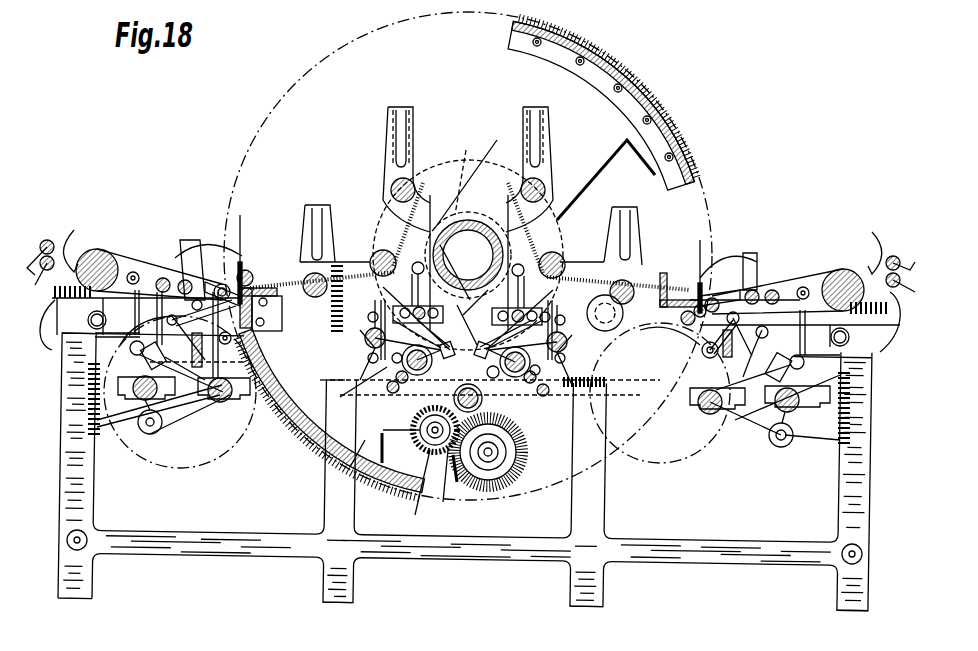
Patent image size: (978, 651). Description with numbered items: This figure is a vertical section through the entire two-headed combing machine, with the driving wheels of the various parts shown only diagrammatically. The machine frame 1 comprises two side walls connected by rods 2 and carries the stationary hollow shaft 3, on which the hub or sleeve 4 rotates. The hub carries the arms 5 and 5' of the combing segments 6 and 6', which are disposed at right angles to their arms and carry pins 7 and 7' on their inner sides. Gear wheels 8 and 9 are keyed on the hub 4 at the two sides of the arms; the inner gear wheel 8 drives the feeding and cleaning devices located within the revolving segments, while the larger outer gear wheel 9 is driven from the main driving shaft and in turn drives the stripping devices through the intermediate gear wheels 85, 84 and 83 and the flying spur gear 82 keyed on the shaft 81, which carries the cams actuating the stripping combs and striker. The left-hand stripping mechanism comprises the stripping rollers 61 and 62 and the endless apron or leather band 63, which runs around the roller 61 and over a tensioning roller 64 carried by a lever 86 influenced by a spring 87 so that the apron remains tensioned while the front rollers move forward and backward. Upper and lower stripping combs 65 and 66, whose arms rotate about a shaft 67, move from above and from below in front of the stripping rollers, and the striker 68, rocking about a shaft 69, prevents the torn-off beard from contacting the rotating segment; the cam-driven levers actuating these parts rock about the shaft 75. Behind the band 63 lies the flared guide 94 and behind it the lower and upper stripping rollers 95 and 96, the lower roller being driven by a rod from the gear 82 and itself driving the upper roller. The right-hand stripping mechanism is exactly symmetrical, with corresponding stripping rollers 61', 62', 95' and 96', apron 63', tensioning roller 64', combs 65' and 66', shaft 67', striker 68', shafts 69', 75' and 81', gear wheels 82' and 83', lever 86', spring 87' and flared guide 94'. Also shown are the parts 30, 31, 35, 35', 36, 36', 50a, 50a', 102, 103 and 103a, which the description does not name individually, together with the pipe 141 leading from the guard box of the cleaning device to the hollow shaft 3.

The machine frame 1 is at (77, 447).
The rods 2 is at (64, 540).
The stationary hollow shaft 3 is at (468, 282).
The hub or sleeve 4 is at (478, 218).
The arm of combing segment 5 is at (420, 430).
The arm of combing segment 5' is at (606, 180).
The combing segment 6 is at (346, 420).
The combing segment 6' is at (602, 104).
The pins 7 is at (319, 470).
The pins 7' is at (629, 116).
The inner gear wheel 8 is at (463, 257).
The outer gear wheel 9 is at (466, 216).
The lever 30 is at (361, 387).
The bracket 31 is at (350, 467).
The post 35 is at (389, 169).
The post 35' is at (547, 169).
The pivot 36 is at (395, 254).
The pivot 36' is at (550, 254).
The roller 50a is at (323, 246).
The roller 50a' is at (614, 248).
The stripping roller 61 is at (218, 312).
The stripping roller 61' is at (725, 285).
The stripping roller 62 is at (220, 260).
The stripping roller 62' is at (739, 271).
The endless apron or leather band 63 is at (159, 268).
The endless apron or leather band 63' is at (769, 279).
The tensioning roller 64 is at (99, 261).
The tensioning roller 64' is at (851, 259).
The upper stripping comb 65 is at (240, 256).
The upper stripping comb 65' is at (688, 273).
The lower stripping comb 66 is at (259, 273).
The lower stripping comb 66' is at (670, 314).
The shaft 67 is at (144, 290).
The shaft 67' is at (791, 271).
The striker 68 is at (208, 257).
The striker 68' is at (732, 245).
The shaft 69 is at (171, 280).
The shaft 69' is at (769, 273).
The shaft 75 is at (190, 400).
The shaft 75' is at (747, 412).
The shaft 81 is at (174, 422).
The shaft 81' is at (794, 427).
The flying spur gear 82 is at (158, 421).
The flying spur gear 82' is at (789, 428).
The intermediate gear wheel 83 is at (180, 405).
The intermediate gear wheel 83' is at (660, 401).
The intermediate gear wheel 84 is at (323, 380).
The intermediate gear wheel 85 is at (380, 360).
The lever 86 is at (146, 314).
The lever 86' is at (800, 331).
The spring 87 is at (134, 333).
The spring 87' is at (820, 334).
The flared guide 94 is at (75, 237).
The flared guide 94' is at (898, 239).
The lower stripping roller 95 is at (34, 280).
The lower stripping roller 95' is at (918, 293).
The upper stripping roller 96 is at (40, 240).
The upper stripping roller 96' is at (921, 262).
The wheel 102 is at (527, 417).
The brush wheel 103 is at (530, 460).
The brush shaft 103a is at (456, 482).
The pipe 141 is at (424, 492).